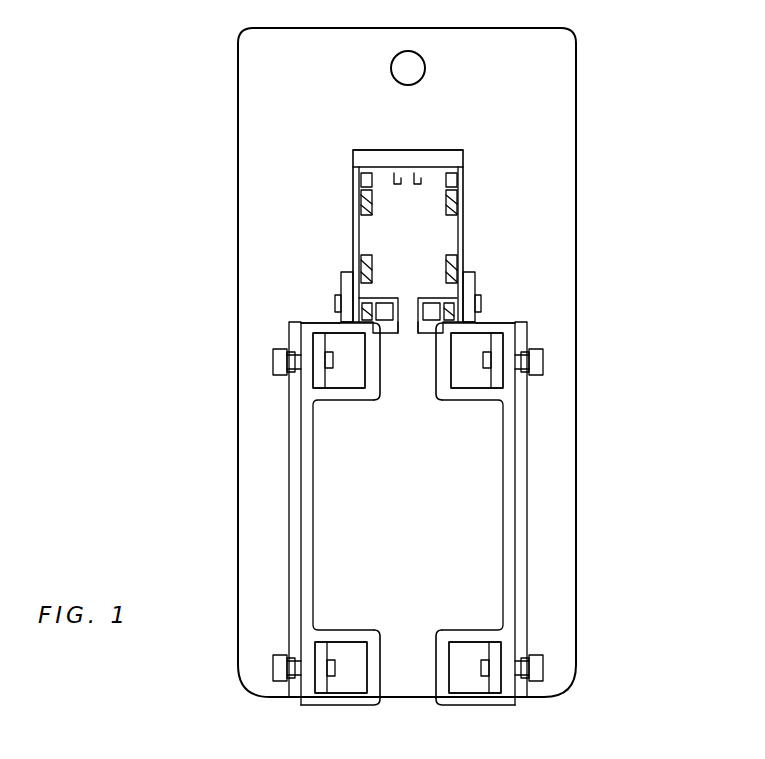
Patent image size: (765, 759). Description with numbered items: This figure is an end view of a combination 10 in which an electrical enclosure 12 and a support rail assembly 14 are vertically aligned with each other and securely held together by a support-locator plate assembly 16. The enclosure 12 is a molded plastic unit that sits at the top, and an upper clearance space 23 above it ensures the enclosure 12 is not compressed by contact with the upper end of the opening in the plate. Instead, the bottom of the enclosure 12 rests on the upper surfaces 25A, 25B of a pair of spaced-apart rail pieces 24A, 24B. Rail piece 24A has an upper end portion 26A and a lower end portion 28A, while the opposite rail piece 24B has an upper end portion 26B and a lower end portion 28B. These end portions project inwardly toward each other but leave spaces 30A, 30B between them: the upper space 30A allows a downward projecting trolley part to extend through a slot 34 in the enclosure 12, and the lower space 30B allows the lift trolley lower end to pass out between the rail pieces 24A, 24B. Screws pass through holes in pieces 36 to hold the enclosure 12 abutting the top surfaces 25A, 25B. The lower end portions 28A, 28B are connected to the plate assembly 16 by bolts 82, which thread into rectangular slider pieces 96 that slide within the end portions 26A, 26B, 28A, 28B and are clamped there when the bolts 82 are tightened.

The combination 10 is at (220, 92).
The electrical enclosure 12 is at (470, 230).
The support rail assembly 14 is at (532, 482).
The support-locator plate assembly 16 is at (234, 467).
The upper clearance space 23 is at (448, 152).
The rail piece 24A is at (320, 512).
The rail piece 24B is at (498, 512).
The upper surface 25A is at (325, 322).
The upper surface 25B is at (503, 322).
The upper end portion 26A is at (345, 398).
The upper end portion 26B is at (468, 398).
The lower end portion 28A is at (340, 628).
The lower end portion 28B is at (466, 626).
The upper space 30A is at (427, 381).
The lower space 30B is at (427, 665).
The slot 34 is at (405, 295).
The pieces 36 is at (342, 280).
The bolts 82 is at (545, 365).
The slider piece 96 is at (320, 350).